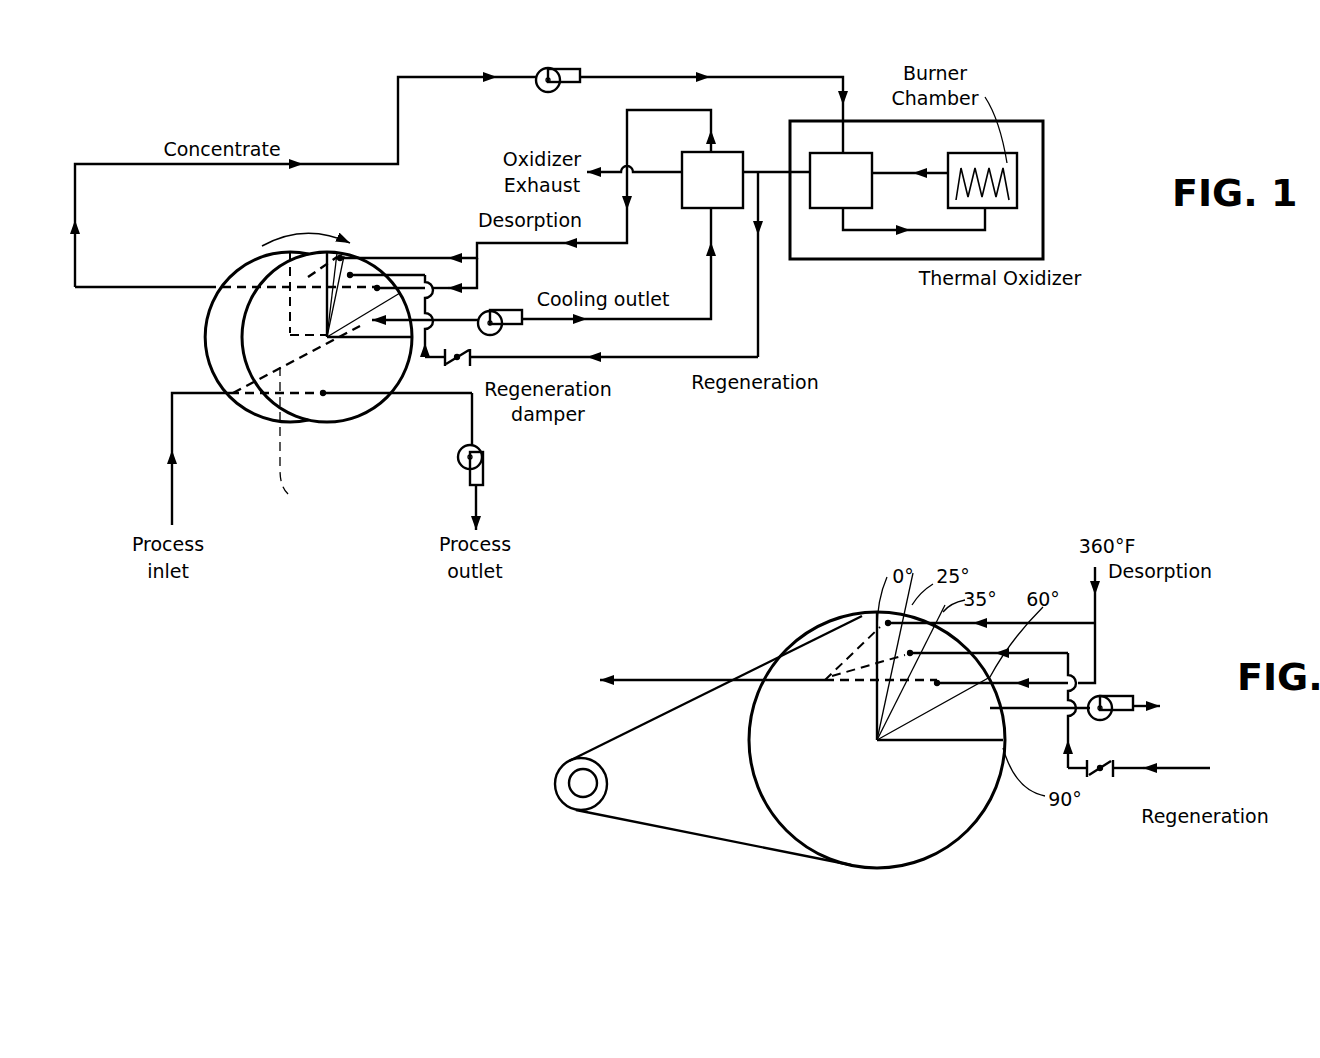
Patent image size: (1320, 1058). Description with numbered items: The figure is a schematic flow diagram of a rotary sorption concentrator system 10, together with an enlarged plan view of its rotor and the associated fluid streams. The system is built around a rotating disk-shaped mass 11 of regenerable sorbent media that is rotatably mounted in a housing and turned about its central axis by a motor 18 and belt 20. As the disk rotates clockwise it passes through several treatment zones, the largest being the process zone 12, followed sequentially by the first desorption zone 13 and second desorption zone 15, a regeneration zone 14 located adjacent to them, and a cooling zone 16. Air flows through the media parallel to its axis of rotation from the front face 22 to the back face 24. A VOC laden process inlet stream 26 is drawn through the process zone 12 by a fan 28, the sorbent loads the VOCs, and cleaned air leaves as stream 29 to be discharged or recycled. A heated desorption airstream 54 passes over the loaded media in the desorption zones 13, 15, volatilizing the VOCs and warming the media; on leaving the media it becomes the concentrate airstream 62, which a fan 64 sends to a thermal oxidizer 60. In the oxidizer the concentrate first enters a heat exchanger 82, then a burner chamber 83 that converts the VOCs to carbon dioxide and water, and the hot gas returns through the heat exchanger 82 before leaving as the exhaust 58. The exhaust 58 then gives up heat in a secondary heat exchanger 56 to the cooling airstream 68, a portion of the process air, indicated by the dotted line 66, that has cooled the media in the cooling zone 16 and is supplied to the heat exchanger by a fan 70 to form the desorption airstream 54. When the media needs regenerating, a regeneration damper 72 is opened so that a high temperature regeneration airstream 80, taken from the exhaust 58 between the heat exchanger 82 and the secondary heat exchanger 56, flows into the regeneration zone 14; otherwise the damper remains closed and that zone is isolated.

In FIG. 1, the rotary sorption concentrator system 10 is at (727, 63).
In FIG. 1, the rotating disk-shaped mass 11 is at (205, 328).
In FIG. 1A, the rotating disk-shaped mass 11 is at (748, 764).
In FIG. 1, the process zone 12 is at (379, 376).
In FIG. 1, the first desorption zone 13 is at (318, 232).
In FIG. 1, the regeneration zone 14 is at (357, 275).
In FIG. 1, the second desorption zone 15 is at (368, 296).
In FIG. 1, the cooling zone 16 is at (388, 310).
In FIG. 1A, the motor 18 is at (562, 764).
In FIG. 1A, the belt 20 is at (633, 821).
In FIG. 1, the front face 22 is at (205, 360).
In FIG. 1, the back face 24 is at (350, 405).
In FIG. 1, the process inlet stream 26 is at (172, 488).
In FIG. 1, the fan 28 is at (483, 477).
In FIG. 1, the cleaned process air stream 29 is at (472, 425).
In FIG. 1, the desorption airstream 54 is at (492, 243).
In FIG. 1, the secondary heat exchanger 56 is at (717, 150).
In FIG. 1, the exhaust 58 is at (770, 176).
In FIG. 1, the thermal oxidizer 60 is at (868, 260).
In FIG. 1, the concentrate airstream 62 is at (95, 282).
In FIG. 1A, the concentrate airstream 62 is at (640, 677).
In FIG. 1, the fan 64 is at (553, 65).
In FIG. 1, the dotted line 66 is at (297, 442).
In FIG. 1, the cooling airstream 68 is at (457, 320).
In FIG. 1, the fan 70 is at (508, 305).
In FIG. 1, the regeneration damper 72 is at (463, 351).
In FIG. 1A, the regeneration damper 72 is at (1102, 766).
In FIG. 1, the regeneration airstream 80 is at (760, 342).
In FIG. 1A, the regeneration airstream 80 is at (1150, 770).
In FIG. 1, the heat exchanger 82 is at (863, 148).
In FIG. 1, the burner chamber 83 is at (1017, 165).